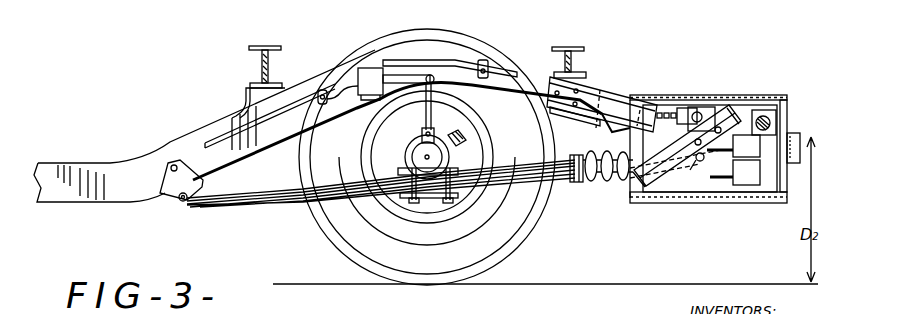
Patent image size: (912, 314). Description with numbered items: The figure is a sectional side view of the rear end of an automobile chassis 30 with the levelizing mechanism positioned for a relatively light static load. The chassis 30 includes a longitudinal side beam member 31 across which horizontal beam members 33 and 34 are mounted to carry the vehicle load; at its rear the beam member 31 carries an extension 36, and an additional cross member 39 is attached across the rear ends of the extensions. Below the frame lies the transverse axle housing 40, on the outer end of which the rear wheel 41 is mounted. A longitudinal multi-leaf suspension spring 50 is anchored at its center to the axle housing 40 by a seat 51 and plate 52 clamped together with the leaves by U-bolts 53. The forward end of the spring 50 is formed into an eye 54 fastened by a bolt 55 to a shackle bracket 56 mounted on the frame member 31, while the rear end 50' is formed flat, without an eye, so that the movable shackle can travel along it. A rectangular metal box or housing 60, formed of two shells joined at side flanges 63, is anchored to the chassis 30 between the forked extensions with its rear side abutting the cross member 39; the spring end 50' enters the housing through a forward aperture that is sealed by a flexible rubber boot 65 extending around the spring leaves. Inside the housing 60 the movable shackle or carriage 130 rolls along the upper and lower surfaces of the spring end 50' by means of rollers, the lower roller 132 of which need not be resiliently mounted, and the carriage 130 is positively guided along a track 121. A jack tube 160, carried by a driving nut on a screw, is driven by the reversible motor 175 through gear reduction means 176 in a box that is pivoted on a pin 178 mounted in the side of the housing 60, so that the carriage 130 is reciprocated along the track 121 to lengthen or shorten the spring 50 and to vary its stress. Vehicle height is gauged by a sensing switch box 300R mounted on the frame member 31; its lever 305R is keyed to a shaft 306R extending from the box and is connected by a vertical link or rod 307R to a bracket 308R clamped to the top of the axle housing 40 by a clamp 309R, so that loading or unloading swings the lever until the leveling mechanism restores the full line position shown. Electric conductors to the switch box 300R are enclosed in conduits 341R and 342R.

The automobile chassis 30 is at (202, 126).
The longitudinal side beam member 31 is at (223, 165).
The horizontal beam member 33 is at (258, 46).
The horizontal beam member 34 is at (572, 48).
The conduit 341R is at (259, 146).
The conduit 342R is at (455, 58).
The sensing switch box 300R is at (364, 68).
The lever 305R is at (398, 75).
The shaft 306R is at (384, 84).
The link or rod 307R is at (437, 115).
The bracket 308R is at (434, 135).
The clamp 309R is at (466, 141).
The extension 36 is at (600, 92).
The axle housing 40 is at (407, 154).
The rear wheel 41 is at (527, 233).
The multi-leaf suspension spring 50 is at (381, 202).
The rear end of leaf spring assembly 50' is at (720, 163).
The seat 51 is at (452, 166).
The plate 52 is at (460, 195).
The U-bolt 53 is at (452, 198).
The eye 54 is at (180, 207).
The bolt 55 is at (175, 207).
The shackle bracket 56 is at (162, 200).
The housing 60 is at (739, 93).
The side flange 63 is at (694, 97).
The rubber boot 65 is at (601, 187).
The track 121 is at (663, 165).
The movable shackle or carriage 130 is at (706, 112).
The lower leaf spring engaging roller 132 is at (702, 162).
The jack tube 160 is at (688, 106).
The motor 175 is at (748, 186).
The gear reduction means 176 is at (787, 128).
The pin 178 is at (768, 118).
The cross member 39 is at (797, 143).